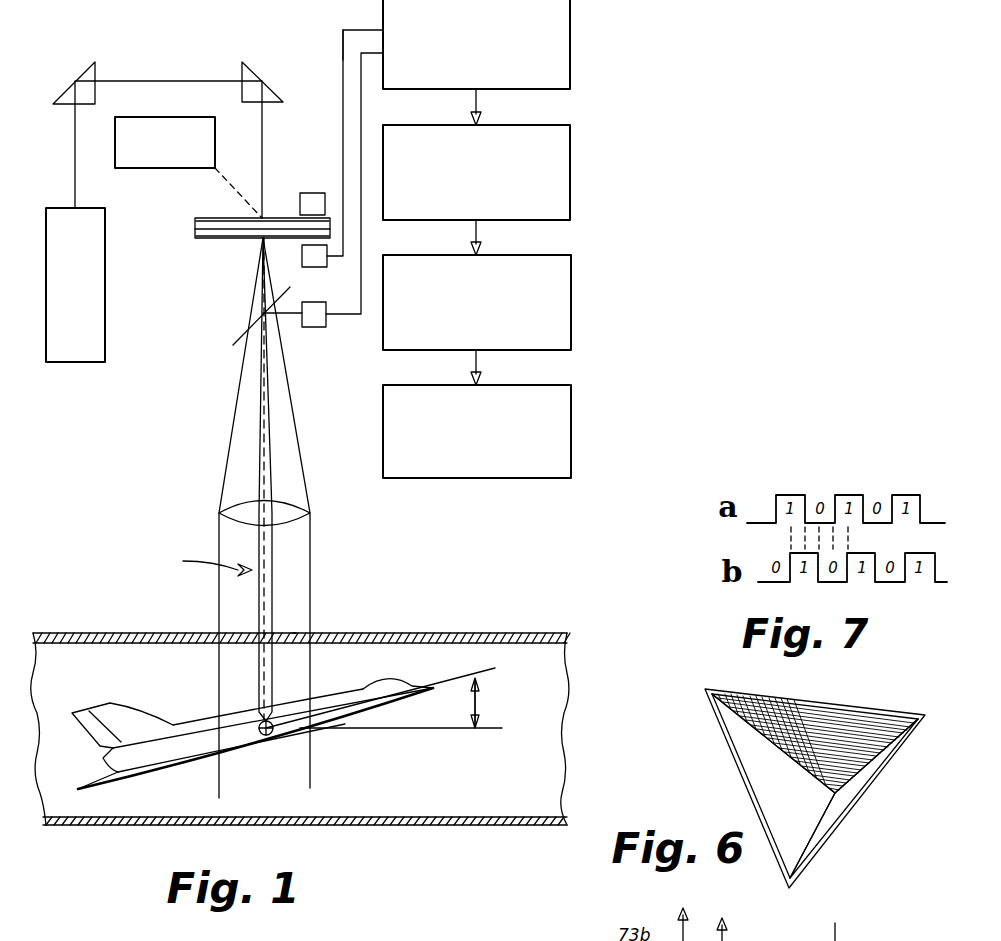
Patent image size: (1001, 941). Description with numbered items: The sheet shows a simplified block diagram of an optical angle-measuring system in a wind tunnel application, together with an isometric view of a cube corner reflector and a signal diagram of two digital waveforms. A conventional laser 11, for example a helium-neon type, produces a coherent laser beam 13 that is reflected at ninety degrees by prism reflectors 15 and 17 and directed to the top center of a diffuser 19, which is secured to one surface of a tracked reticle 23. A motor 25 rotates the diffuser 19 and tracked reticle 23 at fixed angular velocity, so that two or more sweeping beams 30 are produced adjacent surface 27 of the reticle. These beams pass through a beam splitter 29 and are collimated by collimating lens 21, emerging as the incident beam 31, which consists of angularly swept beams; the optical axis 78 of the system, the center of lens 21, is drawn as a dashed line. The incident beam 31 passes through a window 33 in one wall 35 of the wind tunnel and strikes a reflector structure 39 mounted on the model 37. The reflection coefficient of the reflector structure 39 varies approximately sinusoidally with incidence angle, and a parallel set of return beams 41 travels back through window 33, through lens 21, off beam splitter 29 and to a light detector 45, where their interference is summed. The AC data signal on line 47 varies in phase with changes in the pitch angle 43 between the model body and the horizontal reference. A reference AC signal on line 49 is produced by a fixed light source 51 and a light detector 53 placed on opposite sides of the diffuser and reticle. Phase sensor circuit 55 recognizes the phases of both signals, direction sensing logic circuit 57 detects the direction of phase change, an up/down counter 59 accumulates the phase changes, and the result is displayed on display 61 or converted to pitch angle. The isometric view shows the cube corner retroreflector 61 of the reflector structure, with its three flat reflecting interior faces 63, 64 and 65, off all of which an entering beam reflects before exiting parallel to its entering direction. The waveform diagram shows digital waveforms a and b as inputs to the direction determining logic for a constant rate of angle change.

In FIG. 1, the laser 11 is at (85, 357).
In FIG. 1, the laser beam 13 is at (75, 167).
In FIG. 1, the prism reflector 15 is at (80, 64).
In FIG. 1, the prism reflector 17 is at (251, 66).
In FIG. 1, the diffuser 19 is at (204, 218).
In FIG. 1, the collimating lens 21 is at (290, 514).
In FIG. 1, the tracked reticle 23 is at (204, 240).
In FIG. 1, the motor 25 is at (176, 117).
In FIG. 1, the surface of reticle 27 is at (211, 237).
In FIG. 1, the beam splitter 29 is at (232, 333).
In FIG. 1, the sweeping beams 30 is at (256, 286).
In FIG. 1, the incident beam 31 is at (203, 562).
In FIG. 1, the window 33 is at (298, 633).
In FIG. 1, the wall 35 is at (435, 635).
In FIG. 1, the model 37 is at (352, 726).
In FIG. 1, the reflector structure 39 is at (246, 717).
In FIG. 1, the return beams 41 is at (269, 486).
In FIG. 1, the pitch angle 43 is at (481, 703).
In FIG. 1, the light detector 45 is at (313, 328).
In FIG. 1, the line 47 is at (346, 320).
In FIG. 1, the line 49 is at (343, 30).
In FIG. 1, the fixed light source 51 is at (312, 192).
In FIG. 1, the light detector 53 is at (312, 268).
In FIG. 1, the phase sensor circuit 55 is at (573, 45).
In FIG. 1, the direction sensing logic circuit 57 is at (573, 177).
In FIG. 1, the up/down counter 59 is at (573, 304).
In FIG. 1, the display 61 is at (575, 413).
In FIG. 6, the display 61 is at (733, 780).
In FIG. 6, the reflecting interior face 63 is at (773, 786).
In FIG. 6, the reflecting interior face 64 is at (855, 718).
In FIG. 6, the reflecting interior face 65 is at (838, 805).
In FIG. 1, the optical axis 78 is at (267, 440).